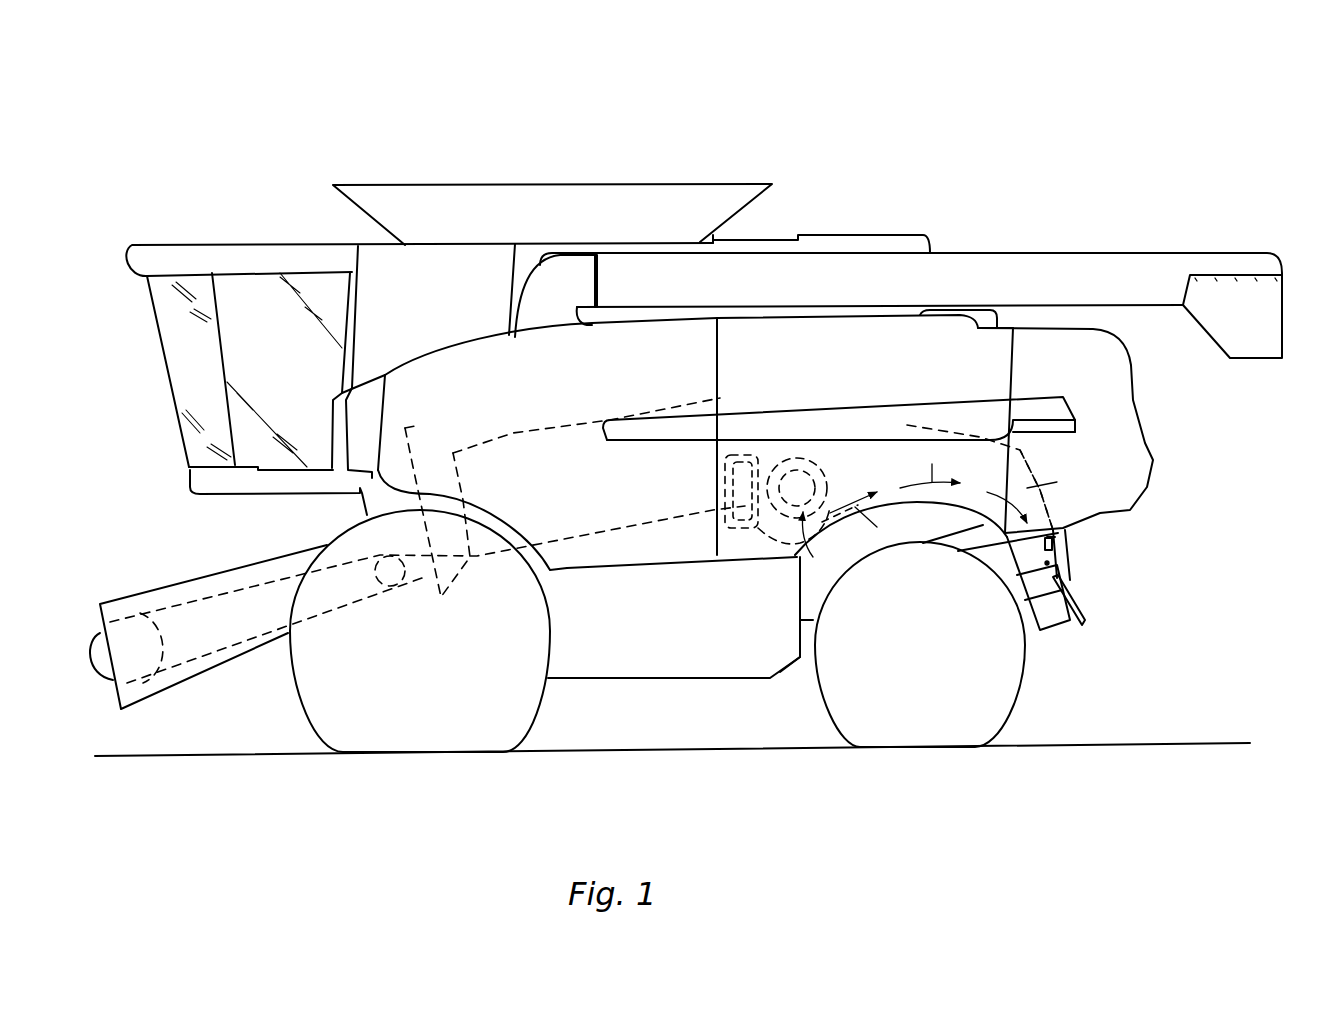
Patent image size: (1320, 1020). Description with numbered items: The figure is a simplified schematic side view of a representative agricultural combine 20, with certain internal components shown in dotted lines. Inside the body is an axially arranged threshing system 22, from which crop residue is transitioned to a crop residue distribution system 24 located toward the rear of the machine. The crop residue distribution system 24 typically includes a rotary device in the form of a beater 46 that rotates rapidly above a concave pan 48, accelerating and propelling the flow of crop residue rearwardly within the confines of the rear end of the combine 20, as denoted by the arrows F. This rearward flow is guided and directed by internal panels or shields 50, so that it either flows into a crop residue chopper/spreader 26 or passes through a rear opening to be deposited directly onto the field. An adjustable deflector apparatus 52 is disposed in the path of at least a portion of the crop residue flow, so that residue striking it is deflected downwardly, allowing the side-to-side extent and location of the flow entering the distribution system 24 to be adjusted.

The agricultural combine 20 is at (1195, 146).
The axially arranged threshing system 22 is at (513, 432).
The crop residue distribution system 24 is at (817, 463).
The crop residue chopper/spreader 26 is at (1079, 636).
The beater 46 is at (827, 477).
The concave pan 48 is at (757, 537).
The shields 50 is at (1027, 462).
The adjustable deflector apparatus 52 is at (753, 453).